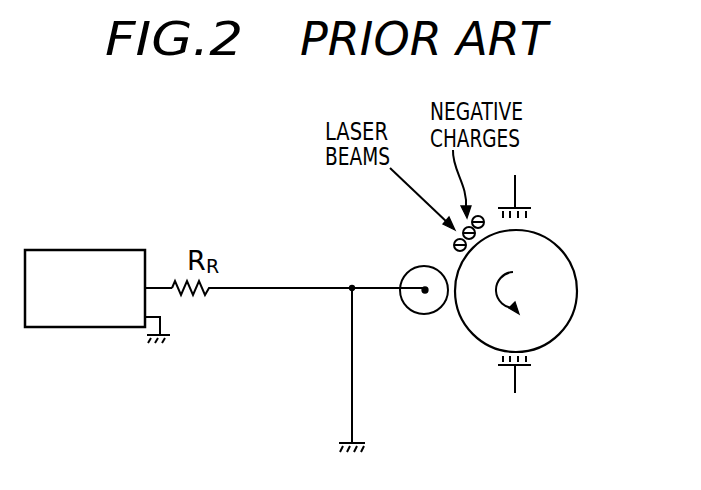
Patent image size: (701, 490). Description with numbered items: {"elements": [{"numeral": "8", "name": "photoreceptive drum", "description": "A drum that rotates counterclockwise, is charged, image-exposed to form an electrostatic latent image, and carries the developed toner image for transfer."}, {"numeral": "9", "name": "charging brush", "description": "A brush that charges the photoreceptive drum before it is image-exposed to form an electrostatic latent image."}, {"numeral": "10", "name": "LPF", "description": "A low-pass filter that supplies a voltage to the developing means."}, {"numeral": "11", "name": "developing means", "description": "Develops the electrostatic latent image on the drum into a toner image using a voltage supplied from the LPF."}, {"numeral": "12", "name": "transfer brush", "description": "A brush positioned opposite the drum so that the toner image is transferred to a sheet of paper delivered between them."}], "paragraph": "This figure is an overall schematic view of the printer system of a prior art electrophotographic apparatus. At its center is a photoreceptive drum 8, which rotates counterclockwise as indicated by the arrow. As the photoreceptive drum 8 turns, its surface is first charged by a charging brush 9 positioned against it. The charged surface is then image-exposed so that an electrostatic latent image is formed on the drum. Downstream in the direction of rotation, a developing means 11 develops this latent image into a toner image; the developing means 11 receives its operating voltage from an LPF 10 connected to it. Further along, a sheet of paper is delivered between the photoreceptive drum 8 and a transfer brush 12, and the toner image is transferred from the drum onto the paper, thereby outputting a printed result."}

The photosensitive drum 8 is at (570, 302).
The charging electrode 9 is at (515, 183).
The low-pass filter 10 is at (90, 250).
The laser light source 11 is at (423, 314).
The discharging electrode 12 is at (515, 383).